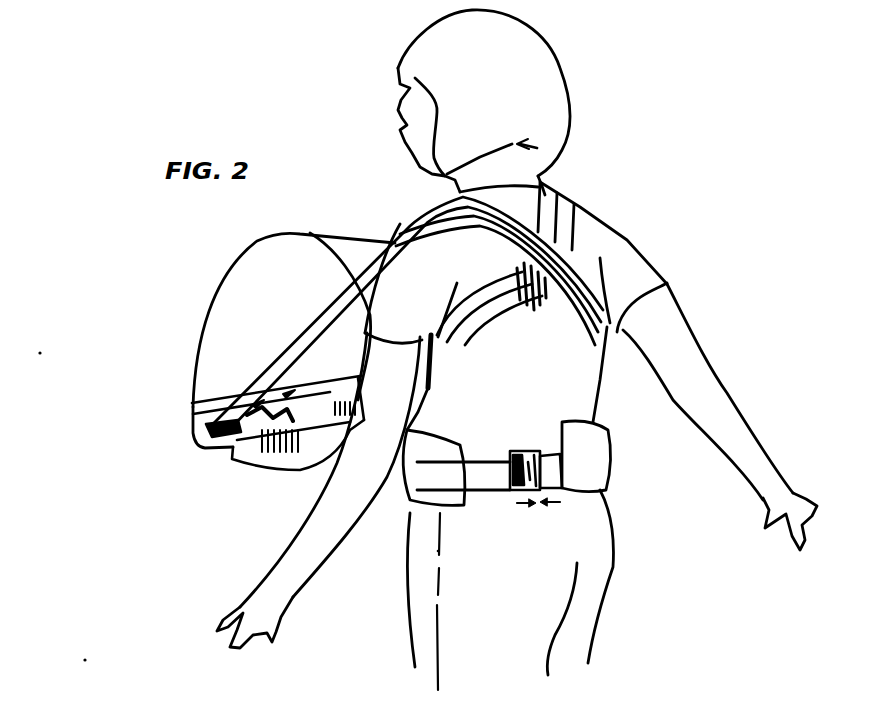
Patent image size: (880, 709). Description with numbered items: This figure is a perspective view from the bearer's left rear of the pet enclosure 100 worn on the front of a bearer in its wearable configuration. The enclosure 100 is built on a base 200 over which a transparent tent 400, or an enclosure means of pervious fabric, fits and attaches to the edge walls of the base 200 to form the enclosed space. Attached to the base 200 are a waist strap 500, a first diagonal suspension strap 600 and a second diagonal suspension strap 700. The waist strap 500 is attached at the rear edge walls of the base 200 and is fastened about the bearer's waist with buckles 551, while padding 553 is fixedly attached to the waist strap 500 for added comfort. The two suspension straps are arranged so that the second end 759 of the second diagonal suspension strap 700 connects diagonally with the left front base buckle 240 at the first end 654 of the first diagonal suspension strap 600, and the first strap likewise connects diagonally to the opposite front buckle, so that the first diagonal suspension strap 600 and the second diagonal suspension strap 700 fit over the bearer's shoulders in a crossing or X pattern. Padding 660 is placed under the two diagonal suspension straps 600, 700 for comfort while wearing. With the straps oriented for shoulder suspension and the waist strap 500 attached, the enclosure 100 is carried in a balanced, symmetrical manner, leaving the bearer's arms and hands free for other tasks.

The enclosure 100 is at (160, 301).
The base 200 is at (193, 418).
The left front base buckle 240 is at (257, 452).
The transparent tent 400 is at (188, 361).
The waist strap 500 is at (560, 497).
The buckles 551 is at (534, 453).
The padding 553 is at (580, 433).
The first diagonal suspension strap 600 is at (333, 306).
The first end of the first diagonal suspension strap 654 is at (230, 437).
The padding 660 is at (500, 303).
The second diagonal suspension strap 700 is at (330, 397).
The second end of the second diagonal suspension strap 759 is at (293, 412).